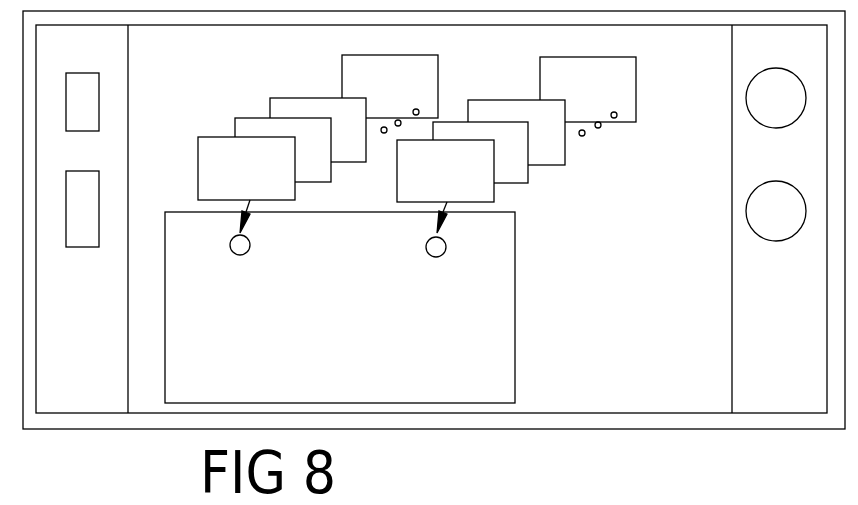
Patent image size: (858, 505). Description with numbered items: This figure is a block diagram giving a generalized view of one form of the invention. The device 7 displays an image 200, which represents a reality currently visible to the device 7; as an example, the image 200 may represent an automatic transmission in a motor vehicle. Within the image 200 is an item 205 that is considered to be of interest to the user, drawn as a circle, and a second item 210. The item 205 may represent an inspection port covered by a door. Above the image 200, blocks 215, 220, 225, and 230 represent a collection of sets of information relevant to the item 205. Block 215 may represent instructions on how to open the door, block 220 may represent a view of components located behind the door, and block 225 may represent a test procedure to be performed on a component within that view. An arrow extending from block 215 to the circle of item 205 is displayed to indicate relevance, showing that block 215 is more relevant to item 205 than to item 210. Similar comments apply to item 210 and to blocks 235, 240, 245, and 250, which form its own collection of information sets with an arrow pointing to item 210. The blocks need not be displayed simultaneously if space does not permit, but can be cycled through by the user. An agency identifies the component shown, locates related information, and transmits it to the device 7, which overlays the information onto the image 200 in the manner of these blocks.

The device 7 is at (658, 462).
The image 200 is at (340, 307).
The item 205 is at (238, 265).
The item 210 is at (427, 266).
The block 215 is at (246, 185).
The block 220 is at (253, 118).
The block 225 is at (285, 97).
The block 230 is at (342, 82).
The block 235 is at (445, 186).
The block 240 is at (517, 183).
The block 245 is at (552, 165).
The block 250 is at (636, 90).